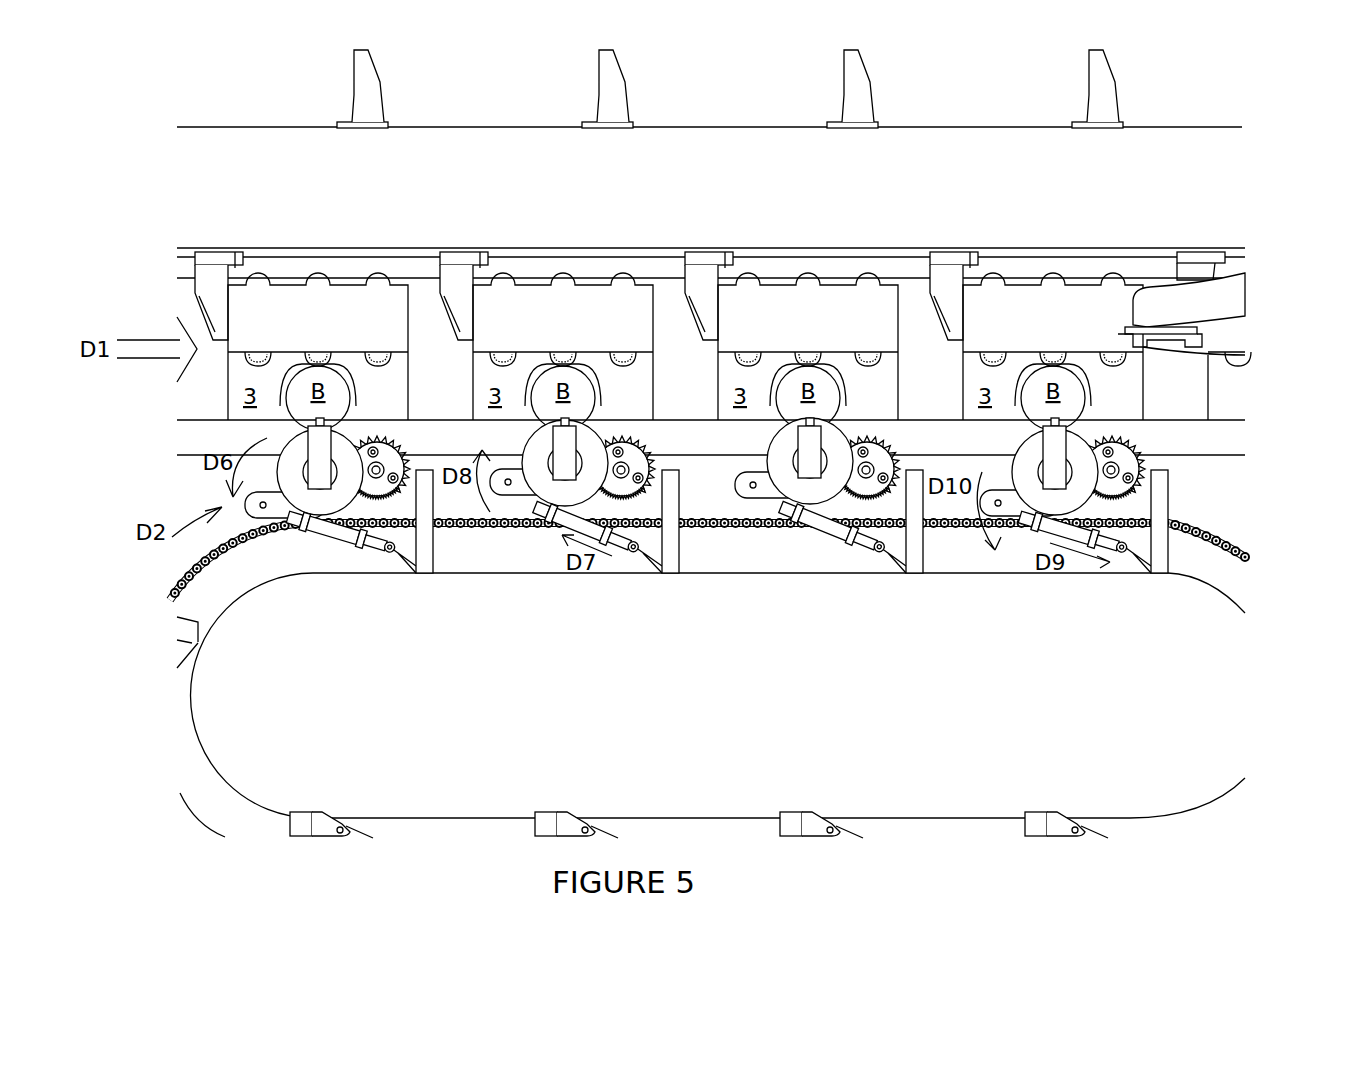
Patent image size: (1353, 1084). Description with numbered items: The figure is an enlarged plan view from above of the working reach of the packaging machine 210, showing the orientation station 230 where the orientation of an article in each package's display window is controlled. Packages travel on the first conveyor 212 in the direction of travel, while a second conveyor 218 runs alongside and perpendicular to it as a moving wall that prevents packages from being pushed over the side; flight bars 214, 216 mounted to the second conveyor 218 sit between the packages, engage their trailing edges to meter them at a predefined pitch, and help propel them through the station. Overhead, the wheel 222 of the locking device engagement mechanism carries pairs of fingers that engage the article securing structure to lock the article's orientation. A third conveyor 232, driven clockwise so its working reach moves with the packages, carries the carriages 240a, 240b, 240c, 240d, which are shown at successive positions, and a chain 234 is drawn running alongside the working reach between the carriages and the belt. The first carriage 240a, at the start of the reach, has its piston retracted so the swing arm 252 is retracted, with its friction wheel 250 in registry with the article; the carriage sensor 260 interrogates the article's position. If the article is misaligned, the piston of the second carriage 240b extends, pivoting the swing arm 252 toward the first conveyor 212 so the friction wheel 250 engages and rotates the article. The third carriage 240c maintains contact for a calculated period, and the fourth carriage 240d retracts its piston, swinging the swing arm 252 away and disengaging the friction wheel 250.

The packaging machine 210 is at (1158, 118).
The first conveyor 212 is at (210, 403).
The flight bar 214 is at (368, 105).
The flight bar 216 is at (215, 270).
The second conveyor 218 is at (310, 165).
The wheel 222 is at (1205, 302).
The orientation station 230 is at (255, 828).
The third conveyor 232 is at (1210, 568).
The drive chain 234 is at (1214, 532).
The first carriage 240a is at (342, 572).
The second carriage 240b is at (575, 558).
The third carriage 240c is at (829, 559).
The fourth carriage 240d is at (1063, 559).
The friction wheel 250 is at (533, 470).
The swing arm 252 is at (1005, 508).
The carriage sensor 260 is at (808, 470).